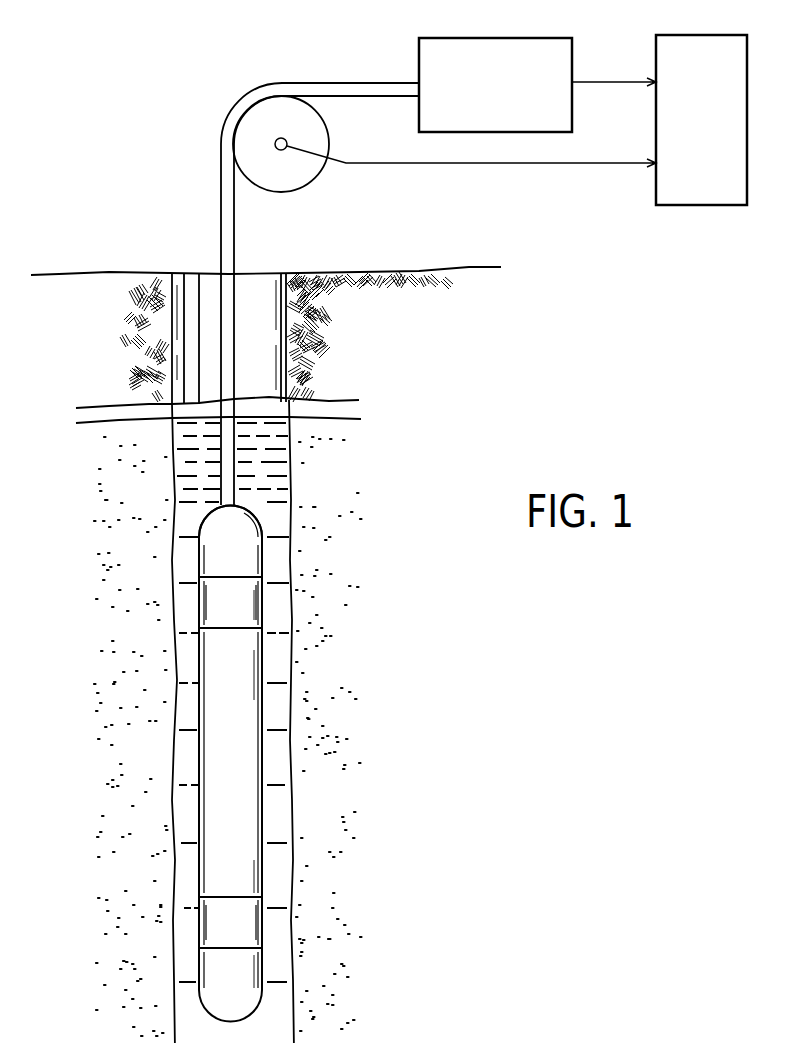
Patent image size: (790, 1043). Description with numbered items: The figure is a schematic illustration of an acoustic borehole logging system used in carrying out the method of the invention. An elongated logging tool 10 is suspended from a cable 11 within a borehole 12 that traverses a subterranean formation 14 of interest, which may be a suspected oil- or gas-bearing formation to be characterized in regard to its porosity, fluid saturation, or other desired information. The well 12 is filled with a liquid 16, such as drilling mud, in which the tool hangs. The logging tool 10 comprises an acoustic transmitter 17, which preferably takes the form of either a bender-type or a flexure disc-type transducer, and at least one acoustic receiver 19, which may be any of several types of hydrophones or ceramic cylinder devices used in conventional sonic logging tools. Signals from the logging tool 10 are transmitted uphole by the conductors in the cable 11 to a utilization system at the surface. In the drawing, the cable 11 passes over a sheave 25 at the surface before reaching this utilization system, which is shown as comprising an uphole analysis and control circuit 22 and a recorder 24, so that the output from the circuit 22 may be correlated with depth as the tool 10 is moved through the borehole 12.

The logging tool 10 is at (263, 796).
The cable 11 is at (221, 471).
The borehole 12 is at (164, 541).
The subterranean formation 14 is at (376, 873).
The liquid 16 is at (265, 503).
The acoustic transmitter 17 is at (263, 600).
The acoustic receiver 19 is at (205, 921).
The analysis and control circuit 22 is at (515, 38).
The recorder 24 is at (697, 35).
The sheave 25 is at (297, 170).